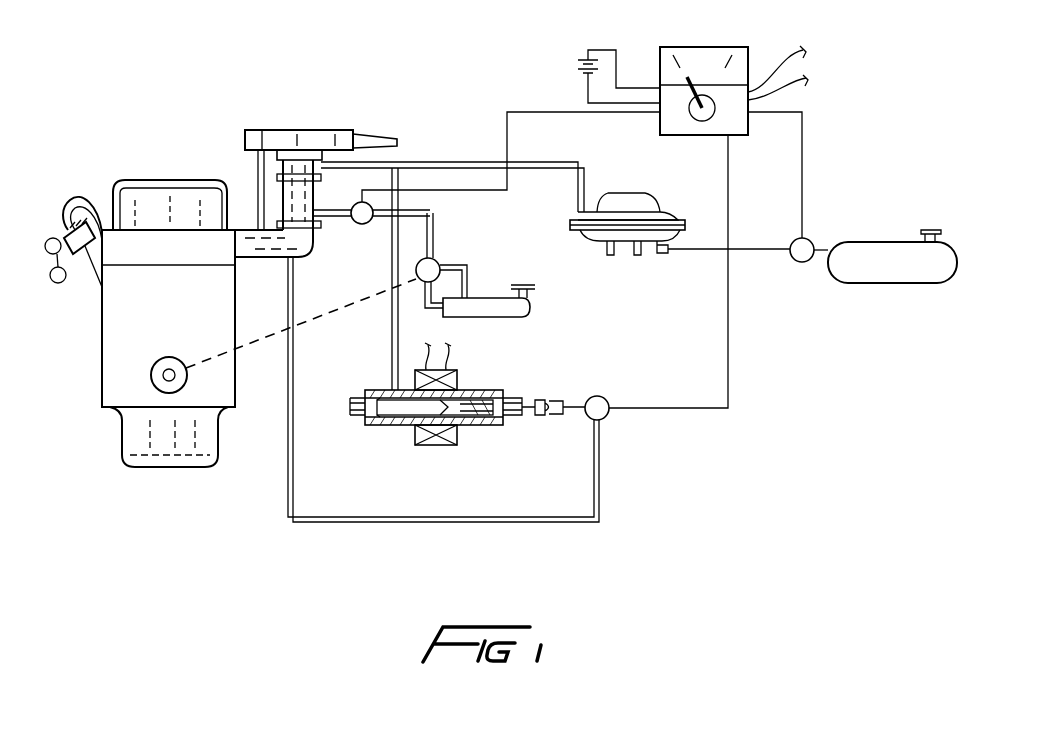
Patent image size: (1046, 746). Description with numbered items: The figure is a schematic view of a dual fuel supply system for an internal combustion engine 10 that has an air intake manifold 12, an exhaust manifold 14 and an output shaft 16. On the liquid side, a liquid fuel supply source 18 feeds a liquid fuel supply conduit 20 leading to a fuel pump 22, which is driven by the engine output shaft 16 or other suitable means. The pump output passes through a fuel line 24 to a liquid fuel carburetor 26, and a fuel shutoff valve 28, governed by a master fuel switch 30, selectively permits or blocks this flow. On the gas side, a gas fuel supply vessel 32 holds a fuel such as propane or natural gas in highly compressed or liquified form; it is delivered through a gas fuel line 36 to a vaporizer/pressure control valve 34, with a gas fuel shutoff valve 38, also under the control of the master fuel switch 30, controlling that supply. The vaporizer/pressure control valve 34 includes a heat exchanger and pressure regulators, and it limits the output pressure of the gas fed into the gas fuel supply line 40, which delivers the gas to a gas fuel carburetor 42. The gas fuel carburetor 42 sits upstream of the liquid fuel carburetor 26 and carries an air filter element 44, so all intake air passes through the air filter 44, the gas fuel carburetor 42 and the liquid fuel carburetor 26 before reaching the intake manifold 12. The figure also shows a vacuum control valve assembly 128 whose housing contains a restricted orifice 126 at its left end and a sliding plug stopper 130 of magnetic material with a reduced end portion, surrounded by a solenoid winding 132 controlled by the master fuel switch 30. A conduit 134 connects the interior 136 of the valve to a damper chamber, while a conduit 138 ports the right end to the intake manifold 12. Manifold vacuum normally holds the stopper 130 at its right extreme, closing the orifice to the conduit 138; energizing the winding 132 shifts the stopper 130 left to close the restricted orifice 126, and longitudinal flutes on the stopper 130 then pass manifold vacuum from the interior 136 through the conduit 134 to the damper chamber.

The internal combustion engine 10 is at (100, 371).
The air intake manifold 12 is at (272, 259).
The exhaust manifold 14 is at (58, 283).
The output shaft 16 is at (153, 388).
The liquid fuel supply source 18 is at (497, 297).
The liquid fuel supply conduit 20 is at (425, 300).
The fuel pump 22 is at (438, 261).
The fuel line 24 is at (434, 229).
The liquid fuel carburetor 26 is at (280, 203).
The fuel shutoff valve 28 is at (370, 229).
The master fuel switch 30 is at (680, 40).
The gas fuel supply vessel 32 is at (890, 241).
The vaporizer/pressure control valve 34 is at (661, 208).
The gas fuel line 36 is at (744, 249).
The gas fuel shutoff valve 38 is at (802, 263).
The gas fuel supply line 40 is at (558, 161).
The gas fuel carburetor 42 is at (280, 156).
The air filter element 44 is at (268, 129).
The restricted orifice 126 is at (361, 394).
The vacuum control valve assembly 128 is at (455, 410).
The sliding plug stopper 130 is at (486, 421).
The solenoid winding 132 is at (430, 446).
The conduit 134 is at (391, 347).
The interior 136 is at (378, 425).
The conduit 138 is at (468, 517).